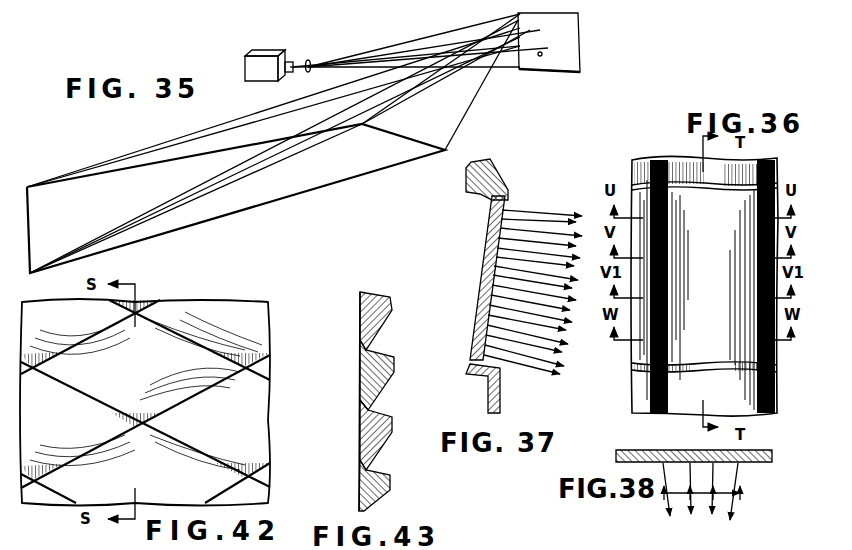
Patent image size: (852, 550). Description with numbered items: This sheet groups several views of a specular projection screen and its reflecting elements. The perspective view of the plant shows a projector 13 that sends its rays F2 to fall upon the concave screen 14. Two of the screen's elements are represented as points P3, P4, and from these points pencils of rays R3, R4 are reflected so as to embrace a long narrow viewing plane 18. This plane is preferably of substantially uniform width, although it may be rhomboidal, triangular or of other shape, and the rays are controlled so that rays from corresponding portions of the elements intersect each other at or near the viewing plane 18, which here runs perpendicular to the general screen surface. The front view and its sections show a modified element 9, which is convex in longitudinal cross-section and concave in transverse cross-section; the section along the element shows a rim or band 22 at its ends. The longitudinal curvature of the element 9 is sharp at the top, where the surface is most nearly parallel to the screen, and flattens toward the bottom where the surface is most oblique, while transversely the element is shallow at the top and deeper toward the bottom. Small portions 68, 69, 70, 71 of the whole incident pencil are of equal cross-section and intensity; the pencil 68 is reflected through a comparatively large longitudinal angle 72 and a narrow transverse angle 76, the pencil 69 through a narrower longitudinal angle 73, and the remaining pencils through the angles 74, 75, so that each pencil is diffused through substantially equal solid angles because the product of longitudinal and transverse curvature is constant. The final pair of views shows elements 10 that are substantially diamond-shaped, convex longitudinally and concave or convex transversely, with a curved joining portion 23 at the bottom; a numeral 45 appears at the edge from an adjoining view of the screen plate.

In FIG. 35, the projector 13 is at (266, 57).
In FIG. 35, the rays F2 is at (308, 60).
In FIG. 35, the viewing plane 18 is at (290, 195).
In FIG. 35, the concave screen 14 is at (578, 53).
In FIG. 35, the pencil of rays R3 is at (520, 14).
In FIG. 35, the pencil of rays R4 is at (536, 62).
In FIG. 35, the element point P3 is at (549, 13).
In FIG. 35, the element point P4 is at (580, 31).
In FIG. 36, the element 9 is at (702, 286).
In FIG. 37, the element 9 is at (496, 164).
In FIG. 38, the element 9 is at (742, 463).
In FIG. 36, the rib / band of screen panel 22 is at (724, 192).
In FIG. 37, the rib / band of screen panel 22 is at (512, 374).
In FIG. 37, the pencil of rays 68 is at (528, 226).
In FIG. 38, the pencil of rays 68 is at (688, 500).
In FIG. 37, the pencil of rays 69 is at (512, 272).
In FIG. 37, the pencil of rays 70 is at (540, 300).
In FIG. 37, the pencil of rays 71 is at (528, 336).
In FIG. 37, the longitudinal angle 72 is at (568, 224).
In FIG. 37, the longitudinal angle 73 is at (562, 272).
In FIG. 37, the ray direction indicator 74 is at (552, 318).
In FIG. 37, the ray direction indicator 75 is at (546, 368).
In FIG. 38, the transverse angle 76 is at (702, 487).
In FIG. 42, the element 10 is at (145, 402).
In FIG. 43, the element 10 is at (362, 362).
In FIG. 42, the curved joining portion 23 is at (140, 402).
In FIG. 43, the curved joining portion 23 is at (362, 418).
In FIG. 42, the element of adjacent figure 45 is at (22, 545).